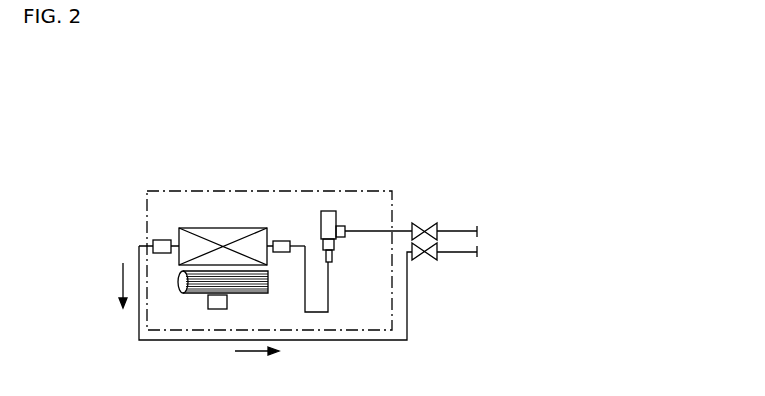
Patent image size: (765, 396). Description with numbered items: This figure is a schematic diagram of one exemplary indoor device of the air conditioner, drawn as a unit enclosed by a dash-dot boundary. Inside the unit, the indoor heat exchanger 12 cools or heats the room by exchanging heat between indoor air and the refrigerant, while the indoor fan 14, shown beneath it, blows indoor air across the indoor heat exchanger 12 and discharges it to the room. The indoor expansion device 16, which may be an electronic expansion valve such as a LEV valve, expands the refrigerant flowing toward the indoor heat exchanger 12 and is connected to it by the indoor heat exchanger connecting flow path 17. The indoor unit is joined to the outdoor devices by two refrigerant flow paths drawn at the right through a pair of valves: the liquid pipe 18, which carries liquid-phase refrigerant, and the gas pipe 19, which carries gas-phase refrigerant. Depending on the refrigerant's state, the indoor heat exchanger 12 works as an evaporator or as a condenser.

The indoor heat exchanger 12 is at (193, 243).
The indoor fan 14 is at (178, 281).
The indoor expansion device 16 is at (329, 210).
The indoor heat exchanger connecting flow path 17 is at (291, 240).
The liquid pipe 18 is at (452, 231).
The gas pipe 19 is at (451, 252).